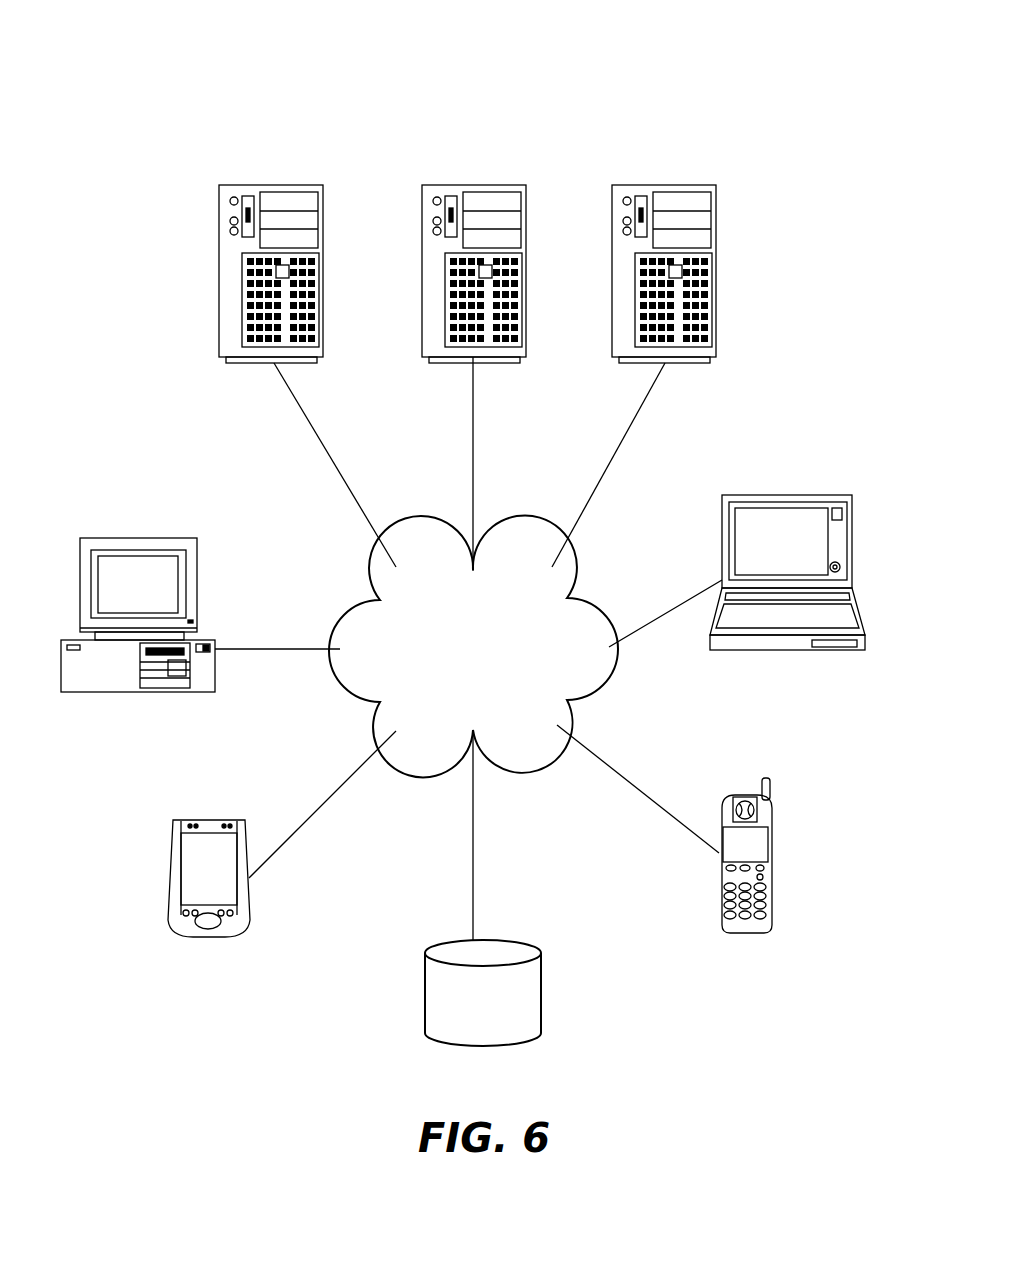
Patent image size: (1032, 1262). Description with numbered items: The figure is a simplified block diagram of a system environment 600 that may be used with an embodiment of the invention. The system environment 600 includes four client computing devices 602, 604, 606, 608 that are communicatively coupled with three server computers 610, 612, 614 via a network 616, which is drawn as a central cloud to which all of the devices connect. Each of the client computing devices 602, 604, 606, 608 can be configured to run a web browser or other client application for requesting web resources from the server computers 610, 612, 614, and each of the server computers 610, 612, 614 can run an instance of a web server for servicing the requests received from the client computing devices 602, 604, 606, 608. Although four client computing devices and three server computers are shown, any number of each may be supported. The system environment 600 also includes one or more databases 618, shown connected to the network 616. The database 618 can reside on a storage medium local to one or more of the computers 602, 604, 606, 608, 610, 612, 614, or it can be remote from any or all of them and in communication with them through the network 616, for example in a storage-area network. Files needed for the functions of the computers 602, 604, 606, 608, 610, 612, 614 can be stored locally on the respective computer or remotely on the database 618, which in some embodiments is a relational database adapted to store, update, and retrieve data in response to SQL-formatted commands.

The system environment 600 is at (858, 104).
The client computing device 602 is at (136, 538).
The client computing device 604 is at (208, 940).
The client computing device 606 is at (743, 933).
The client computing device 608 is at (784, 495).
The server computer 610 is at (270, 185).
The server computer 612 is at (474, 185).
The server computer 614 is at (664, 185).
The network 616 is at (458, 692).
The database 618 is at (468, 1043).